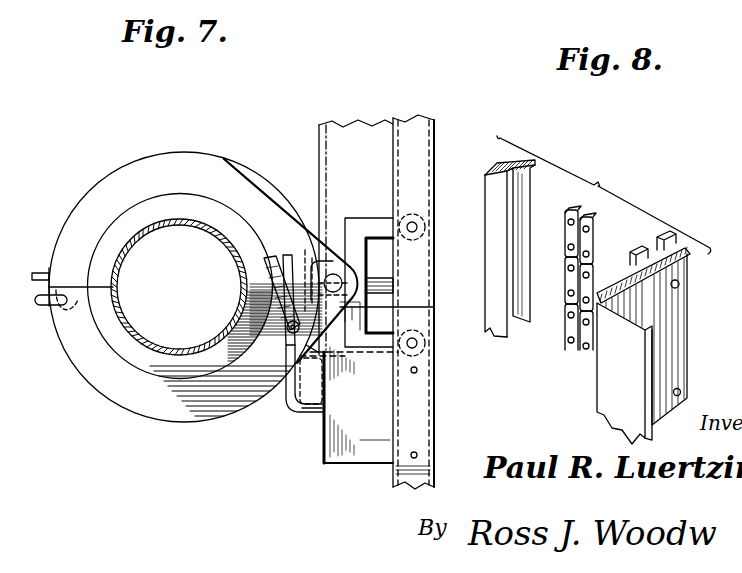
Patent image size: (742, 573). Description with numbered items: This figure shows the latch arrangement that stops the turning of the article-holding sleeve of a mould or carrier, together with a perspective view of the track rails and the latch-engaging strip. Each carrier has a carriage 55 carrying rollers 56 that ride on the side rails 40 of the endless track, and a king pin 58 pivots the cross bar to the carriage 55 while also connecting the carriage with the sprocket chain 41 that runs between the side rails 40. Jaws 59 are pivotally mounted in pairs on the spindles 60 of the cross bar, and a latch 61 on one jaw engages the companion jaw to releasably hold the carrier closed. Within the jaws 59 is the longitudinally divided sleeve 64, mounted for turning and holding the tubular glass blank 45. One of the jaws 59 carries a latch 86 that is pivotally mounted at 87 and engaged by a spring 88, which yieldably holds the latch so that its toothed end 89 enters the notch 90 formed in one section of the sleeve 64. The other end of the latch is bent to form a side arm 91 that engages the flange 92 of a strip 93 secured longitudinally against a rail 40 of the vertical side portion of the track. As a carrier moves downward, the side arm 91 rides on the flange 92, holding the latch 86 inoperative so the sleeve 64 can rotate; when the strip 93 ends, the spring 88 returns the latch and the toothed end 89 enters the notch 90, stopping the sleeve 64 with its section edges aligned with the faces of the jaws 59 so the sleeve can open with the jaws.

In FIG. 7, the side rails 40 is at (420, 152).
In FIG. 8, the side rails 40 is at (532, 167).
In FIG. 8, the sprocket chain 41 is at (589, 231).
In FIG. 7, the tubular blank 45 is at (209, 228).
In FIG. 7, the carriage 55 is at (357, 243).
In FIG. 7, the rollers 56 is at (403, 215).
In FIG. 7, the king pin 58 is at (383, 280).
In FIG. 7, the jaws 59 is at (205, 168).
In FIG. 7, the spindles 60 is at (340, 304).
In FIG. 7, the latch 61 is at (52, 307).
In FIG. 7, the longitudinally divided sleeve 64 is at (125, 360).
In FIG. 7, the latch 86 is at (280, 390).
In FIG. 7, the pivot 87 is at (316, 352).
In FIG. 7, the spring 88 is at (310, 356).
In FIG. 7, the toothed end 89 is at (284, 255).
In FIG. 7, the notch 90 is at (263, 262).
In FIG. 7, the side arm 91 is at (303, 415).
In FIG. 7, the flange 92 is at (325, 446).
In FIG. 8, the flange 92 is at (626, 392).
In FIG. 7, the strip 93 is at (360, 468).
In FIG. 8, the strip 93 is at (673, 365).